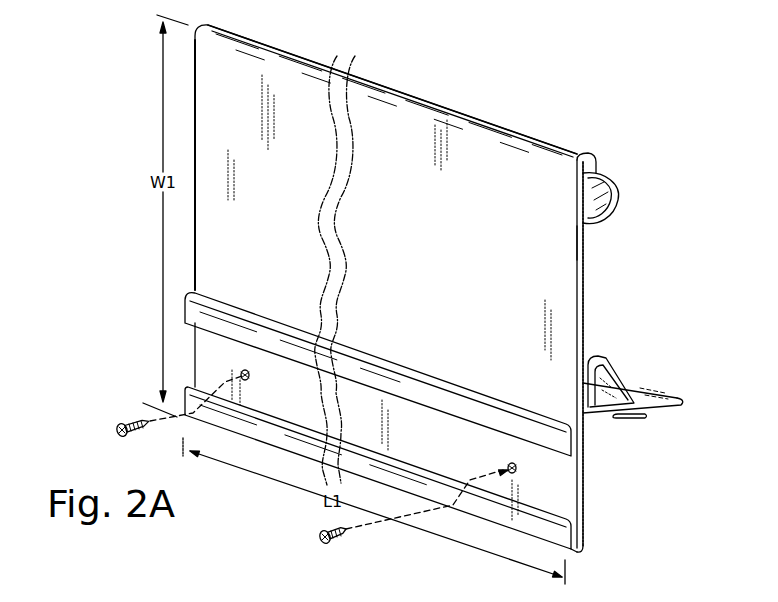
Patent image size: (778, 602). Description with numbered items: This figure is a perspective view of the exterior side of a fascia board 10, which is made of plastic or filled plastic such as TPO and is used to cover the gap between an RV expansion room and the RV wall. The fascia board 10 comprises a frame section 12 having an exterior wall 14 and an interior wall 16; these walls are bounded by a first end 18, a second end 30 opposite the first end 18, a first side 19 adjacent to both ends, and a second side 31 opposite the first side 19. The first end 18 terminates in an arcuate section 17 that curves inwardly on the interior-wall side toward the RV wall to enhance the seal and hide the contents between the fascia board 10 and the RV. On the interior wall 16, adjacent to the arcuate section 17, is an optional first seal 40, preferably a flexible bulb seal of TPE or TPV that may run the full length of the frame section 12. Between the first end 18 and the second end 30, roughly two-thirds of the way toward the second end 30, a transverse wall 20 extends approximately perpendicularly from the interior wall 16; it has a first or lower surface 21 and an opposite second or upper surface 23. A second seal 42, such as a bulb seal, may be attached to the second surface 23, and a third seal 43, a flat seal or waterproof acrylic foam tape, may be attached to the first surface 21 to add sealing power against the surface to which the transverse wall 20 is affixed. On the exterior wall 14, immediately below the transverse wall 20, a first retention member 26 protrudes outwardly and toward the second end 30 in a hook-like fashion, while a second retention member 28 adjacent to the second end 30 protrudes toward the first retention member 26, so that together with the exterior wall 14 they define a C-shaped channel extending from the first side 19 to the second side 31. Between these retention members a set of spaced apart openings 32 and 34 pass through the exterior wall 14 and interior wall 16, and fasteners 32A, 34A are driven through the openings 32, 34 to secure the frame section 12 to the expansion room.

The fascia board 10 is at (121, 40).
The frame section 12 is at (217, 217).
The exterior wall 14 is at (219, 259).
The interior wall 16 is at (594, 300).
The arcuate section 17 is at (571, 158).
The first end 18 is at (530, 118).
The first side 19 is at (583, 243).
The transverse wall 20 is at (652, 388).
The first surface 21 is at (664, 418).
The second surface 23 is at (639, 380).
The first retention member 26 is at (550, 455).
The second retention member 28 is at (581, 570).
The second end 30 is at (587, 560).
The second side 31 is at (195, 100).
The opening 32 is at (240, 375).
The fastener 32A is at (130, 420).
The opening 34 is at (510, 477).
The fastener 34A is at (320, 540).
The first seal 40 is at (600, 178).
The second seal 42 is at (606, 357).
The third seal 43 is at (628, 422).